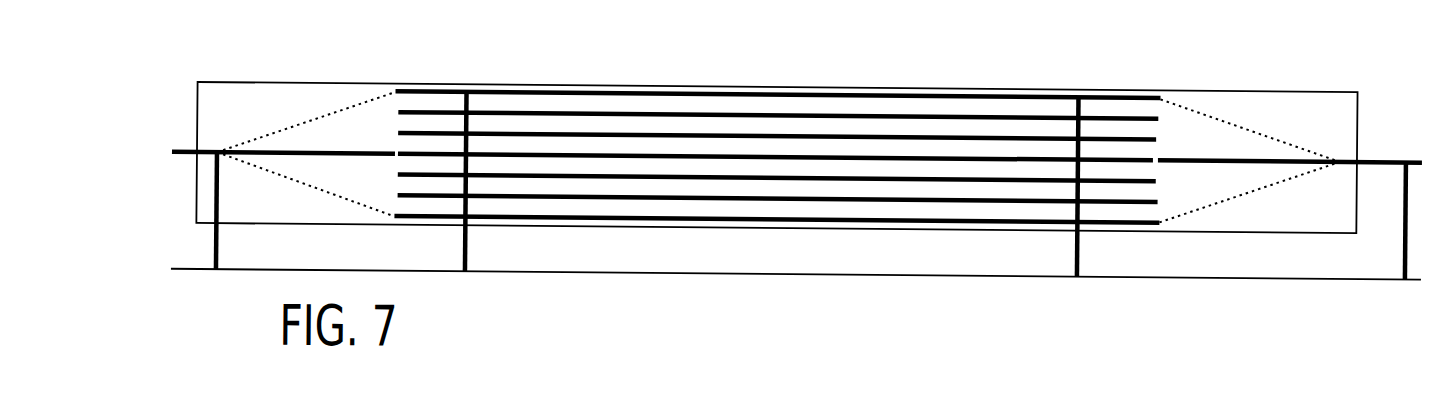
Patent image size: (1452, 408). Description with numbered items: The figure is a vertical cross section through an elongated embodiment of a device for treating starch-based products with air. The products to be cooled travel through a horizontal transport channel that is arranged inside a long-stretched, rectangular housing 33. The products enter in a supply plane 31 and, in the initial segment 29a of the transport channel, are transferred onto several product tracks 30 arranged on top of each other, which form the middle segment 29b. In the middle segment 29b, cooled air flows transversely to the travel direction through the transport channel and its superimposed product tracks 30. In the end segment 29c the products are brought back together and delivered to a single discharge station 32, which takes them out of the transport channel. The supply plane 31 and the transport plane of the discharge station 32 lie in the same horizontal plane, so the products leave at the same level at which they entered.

The initial segment 29a is at (312, 90).
The middle segment 29b is at (540, 85).
The end segment 29c is at (1207, 93).
The product tracks 30 is at (837, 171).
The supply plane 31 is at (183, 153).
The discharge station 32 is at (1408, 152).
The housing 33 is at (226, 80).